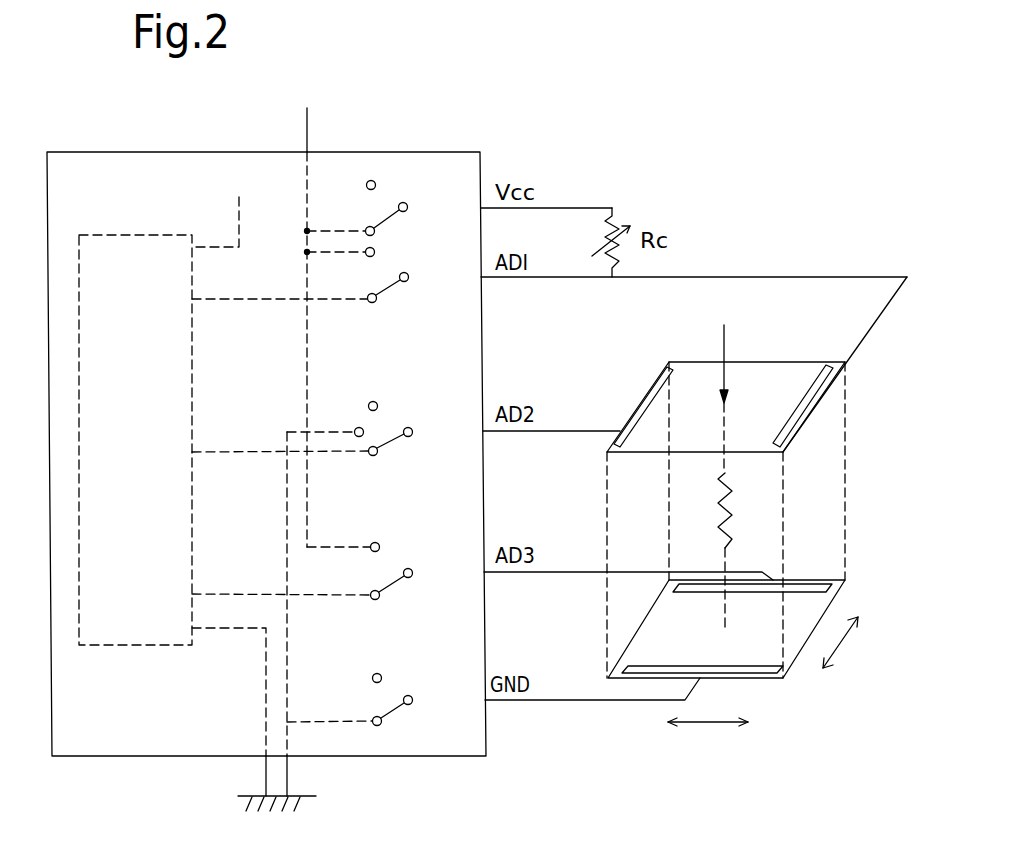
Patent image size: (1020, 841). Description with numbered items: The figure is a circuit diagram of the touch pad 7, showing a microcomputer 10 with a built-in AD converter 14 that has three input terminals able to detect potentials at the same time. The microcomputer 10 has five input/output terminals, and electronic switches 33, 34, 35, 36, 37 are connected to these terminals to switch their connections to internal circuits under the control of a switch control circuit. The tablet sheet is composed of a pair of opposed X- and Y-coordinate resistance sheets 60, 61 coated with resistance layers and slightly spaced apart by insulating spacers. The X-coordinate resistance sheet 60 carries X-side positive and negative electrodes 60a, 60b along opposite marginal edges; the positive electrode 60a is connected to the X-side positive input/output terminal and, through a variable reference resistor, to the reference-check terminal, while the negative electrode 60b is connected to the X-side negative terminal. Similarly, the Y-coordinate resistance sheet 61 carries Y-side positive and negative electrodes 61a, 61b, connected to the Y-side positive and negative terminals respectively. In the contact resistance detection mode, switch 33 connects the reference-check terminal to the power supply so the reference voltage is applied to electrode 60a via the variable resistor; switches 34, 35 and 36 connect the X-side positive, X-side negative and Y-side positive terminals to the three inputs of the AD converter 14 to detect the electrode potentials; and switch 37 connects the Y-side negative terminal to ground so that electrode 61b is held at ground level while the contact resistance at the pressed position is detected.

The touch pad 7 is at (681, 186).
The microcomputer 10 is at (453, 152).
The AD converter 14 is at (156, 233).
The electronic switch 33 is at (388, 210).
The electronic switch 34 is at (387, 285).
The electronic switch 35 is at (395, 438).
The electronic switch 36 is at (397, 580).
The electronic switch 37 is at (397, 705).
The X-coordinate resistance sheet 60 is at (791, 378).
The X-side positive electrode 60a is at (817, 388).
The X-side negative electrode 60b is at (643, 392).
The Y-coordinate resistance sheet 61 is at (793, 623).
The Y-side positive electrode 61a is at (808, 584).
The Y-side negative electrode 61b is at (760, 668).